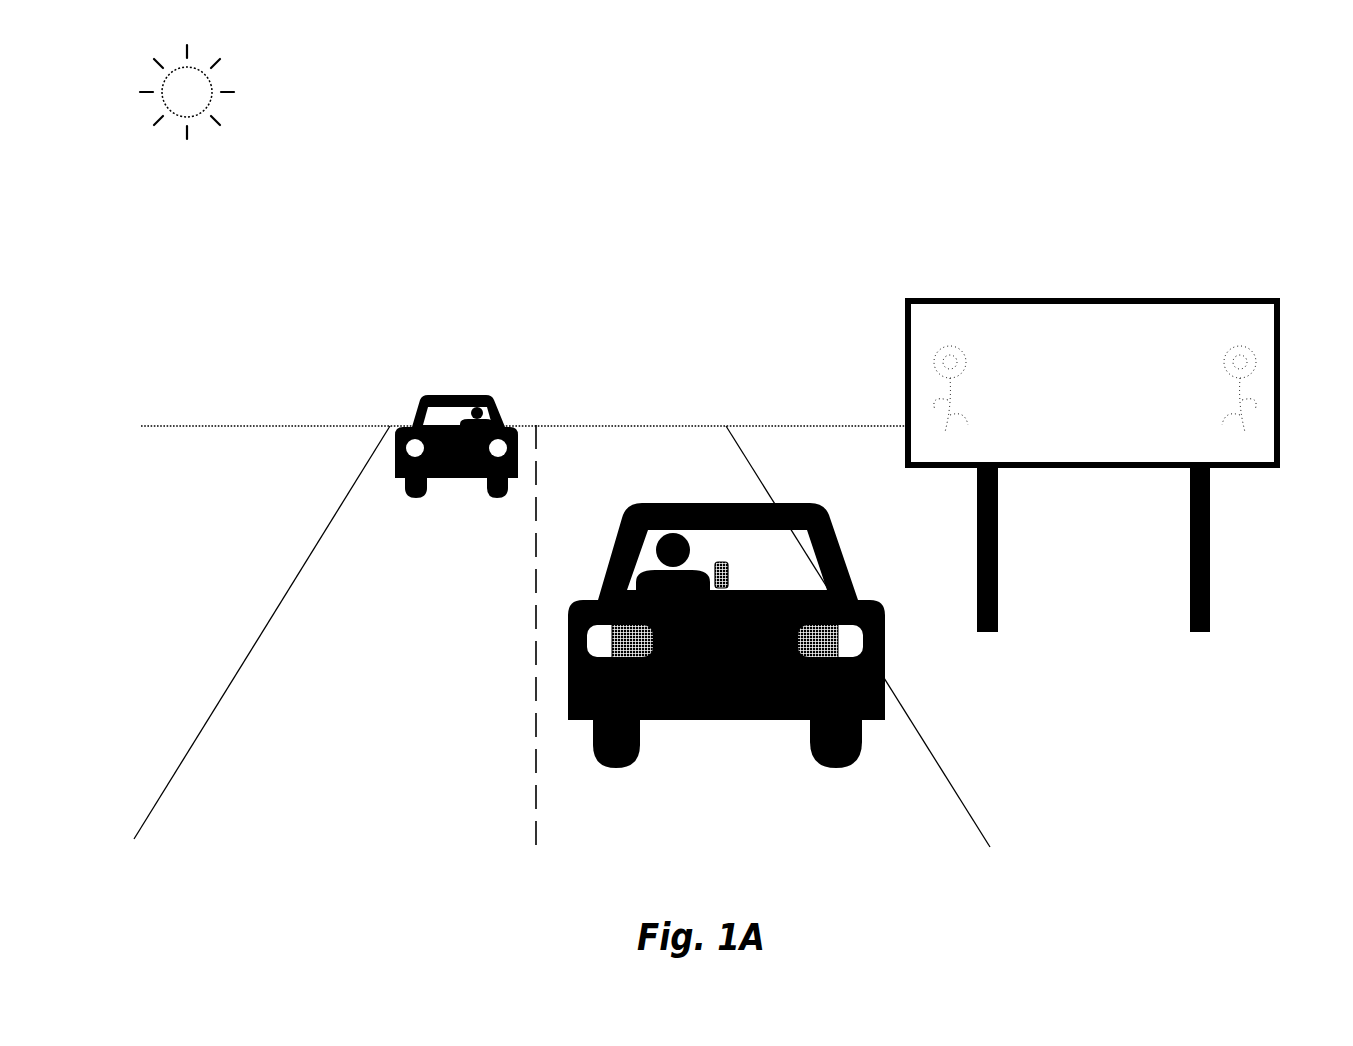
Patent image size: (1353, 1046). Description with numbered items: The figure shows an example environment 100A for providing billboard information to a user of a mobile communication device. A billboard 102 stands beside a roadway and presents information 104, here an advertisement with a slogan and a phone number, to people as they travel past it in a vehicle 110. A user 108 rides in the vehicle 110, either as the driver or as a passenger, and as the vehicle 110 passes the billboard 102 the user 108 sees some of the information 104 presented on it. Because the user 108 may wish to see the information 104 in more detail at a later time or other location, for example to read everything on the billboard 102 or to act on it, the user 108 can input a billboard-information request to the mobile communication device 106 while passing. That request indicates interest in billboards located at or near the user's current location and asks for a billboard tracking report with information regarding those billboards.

The example environment 100A is at (1218, 115).
The billboard 102 is at (968, 297).
The information 104 is at (1095, 337).
The mobile communication device 106 is at (729, 572).
The user 108 is at (694, 548).
The vehicle 110 is at (632, 498).